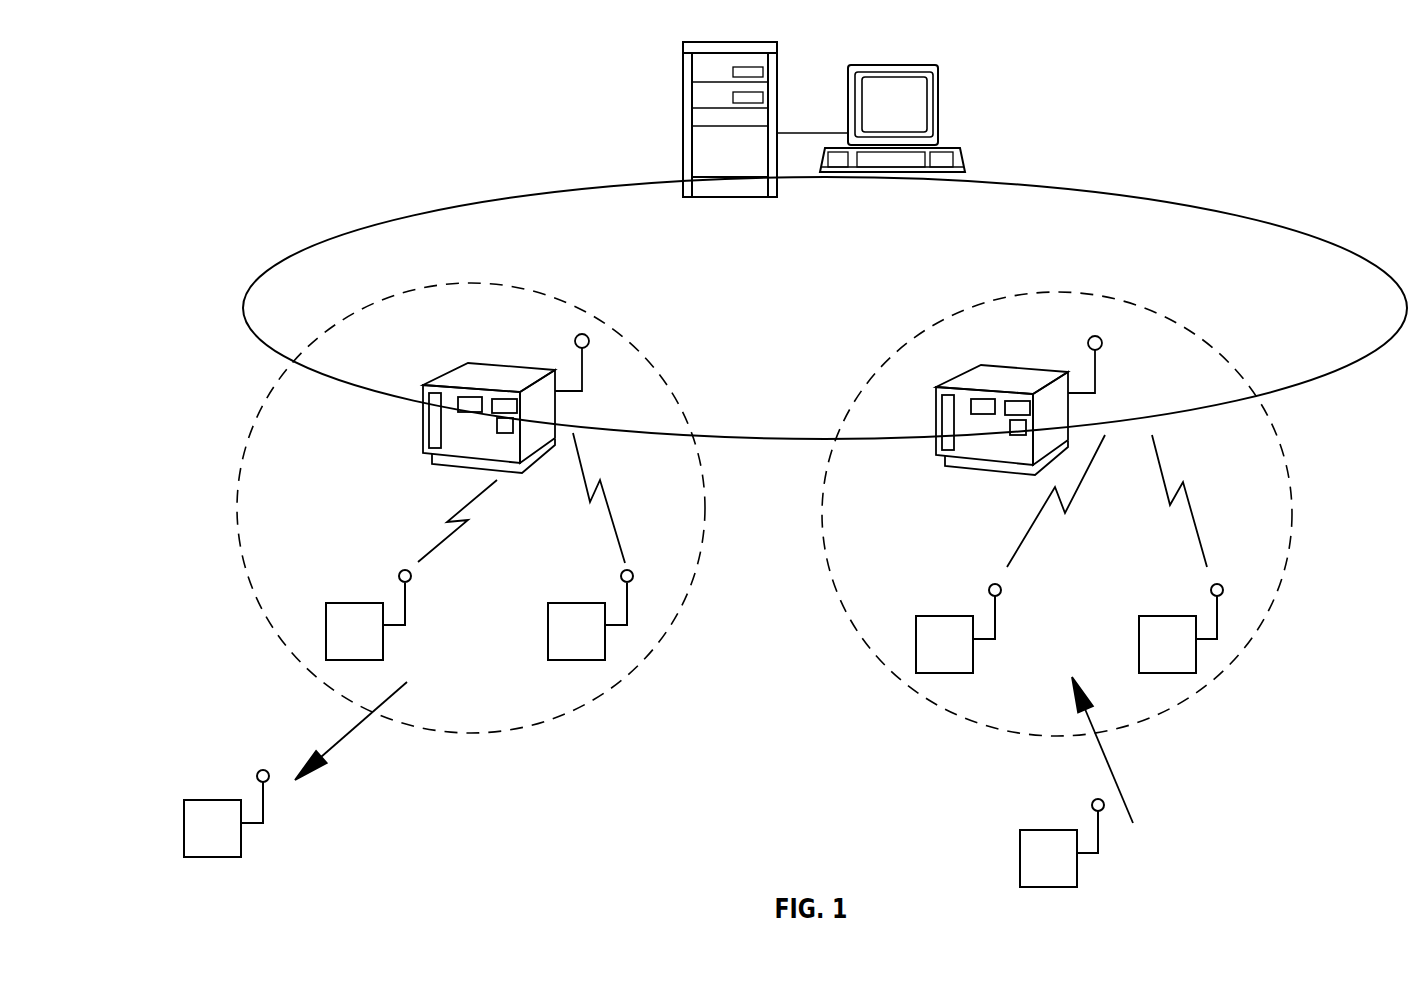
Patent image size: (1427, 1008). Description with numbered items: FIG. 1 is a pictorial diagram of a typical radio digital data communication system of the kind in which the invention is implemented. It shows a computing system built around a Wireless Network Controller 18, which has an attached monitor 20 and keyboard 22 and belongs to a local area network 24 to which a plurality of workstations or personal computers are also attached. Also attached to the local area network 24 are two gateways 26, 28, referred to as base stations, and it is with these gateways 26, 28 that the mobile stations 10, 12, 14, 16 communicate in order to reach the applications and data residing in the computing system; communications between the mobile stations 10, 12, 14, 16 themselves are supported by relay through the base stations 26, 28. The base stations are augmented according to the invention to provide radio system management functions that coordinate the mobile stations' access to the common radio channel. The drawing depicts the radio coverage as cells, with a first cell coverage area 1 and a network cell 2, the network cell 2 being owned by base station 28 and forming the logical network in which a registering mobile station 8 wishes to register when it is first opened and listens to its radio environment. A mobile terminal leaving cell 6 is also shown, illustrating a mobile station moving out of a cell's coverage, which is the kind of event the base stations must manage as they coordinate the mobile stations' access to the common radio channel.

The first cell coverage area 1 is at (590, 690).
The network cell 2 is at (1177, 700).
The mobile terminal leaving cell 6 is at (214, 800).
The registering mobile station 8 is at (1050, 830).
The mobile station 10 is at (357, 603).
The mobile station 12 is at (584, 603).
The mobile station 14 is at (946, 616).
The mobile station 16 is at (1172, 616).
The Wireless Network Controller 18 is at (683, 67).
The monitor 20 is at (940, 88).
The keyboard 22 is at (963, 158).
The local area network 24 is at (1352, 360).
The gateway 26 is at (526, 363).
The gateway 28 is at (1040, 367).